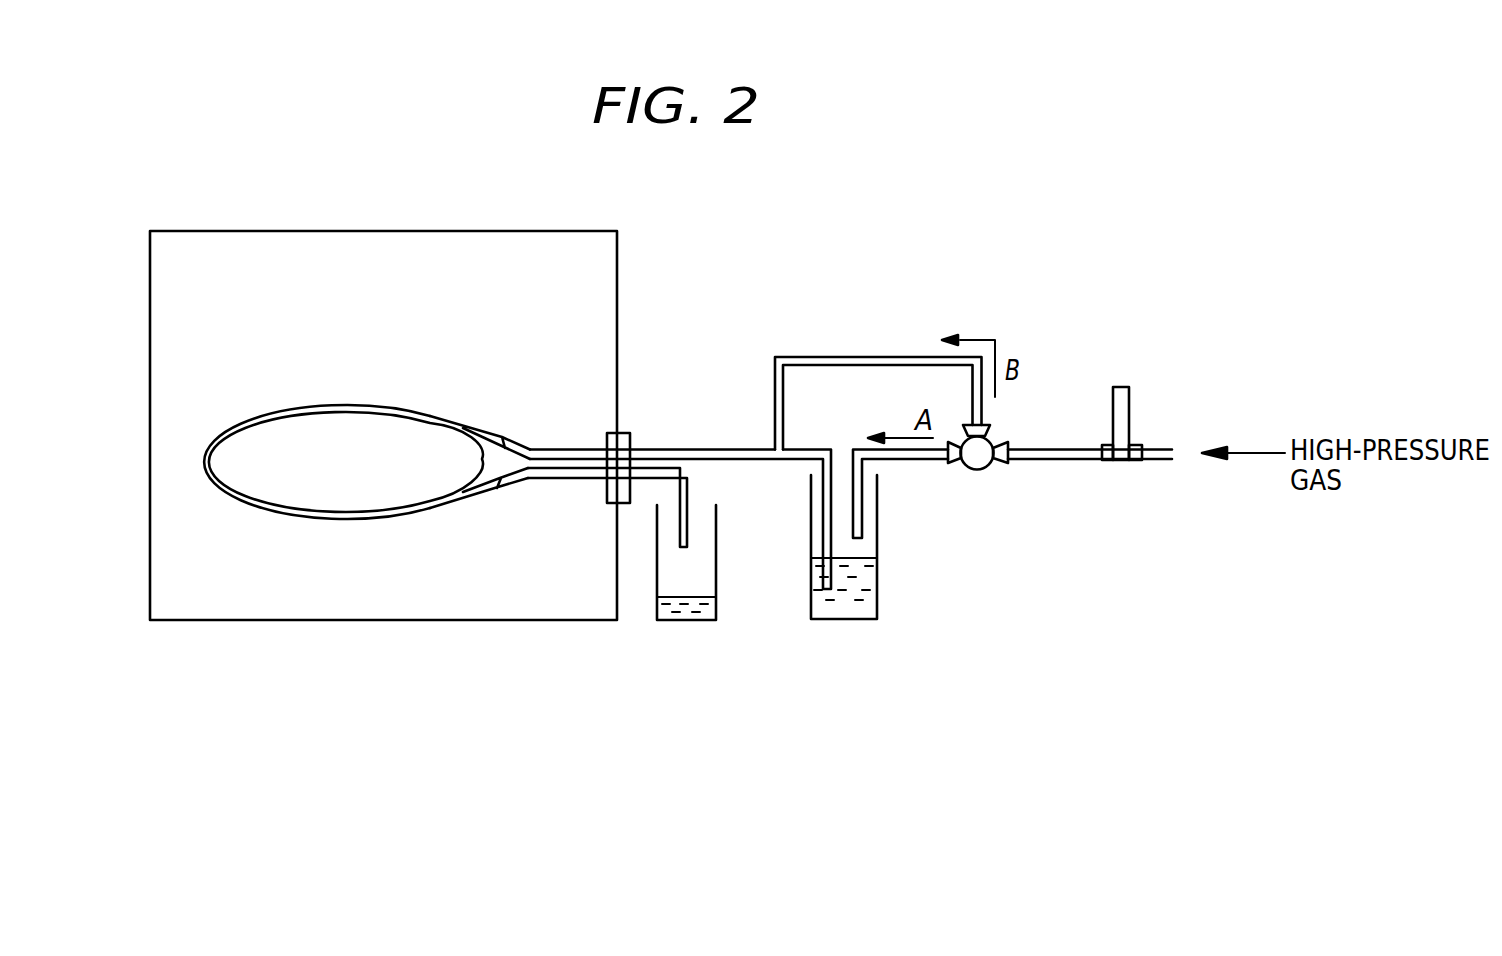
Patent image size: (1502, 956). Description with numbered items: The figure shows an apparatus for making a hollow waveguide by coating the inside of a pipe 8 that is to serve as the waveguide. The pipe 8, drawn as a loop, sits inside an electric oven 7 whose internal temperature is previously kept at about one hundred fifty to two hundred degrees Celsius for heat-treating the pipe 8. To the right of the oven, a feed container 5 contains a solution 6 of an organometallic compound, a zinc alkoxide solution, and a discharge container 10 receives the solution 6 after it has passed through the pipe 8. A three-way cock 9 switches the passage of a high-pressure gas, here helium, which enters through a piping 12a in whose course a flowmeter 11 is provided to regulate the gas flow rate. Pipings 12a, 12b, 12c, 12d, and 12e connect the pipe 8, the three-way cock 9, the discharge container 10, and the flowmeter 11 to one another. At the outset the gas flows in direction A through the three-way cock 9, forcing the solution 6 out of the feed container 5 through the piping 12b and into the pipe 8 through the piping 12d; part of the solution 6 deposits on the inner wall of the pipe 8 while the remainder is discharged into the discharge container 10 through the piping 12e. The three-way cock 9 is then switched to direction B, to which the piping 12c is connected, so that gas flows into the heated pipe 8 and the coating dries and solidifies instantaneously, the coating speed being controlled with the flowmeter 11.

The feed container 5 is at (870, 539).
The solution 6 is at (868, 607).
The electric oven 7 is at (533, 247).
The pipe 8 is at (353, 514).
The three-way cock 9 is at (982, 458).
The discharge container 10 is at (707, 573).
The flowmeter 11 is at (1125, 418).
The piping 12a is at (1068, 452).
The piping 12b is at (923, 462).
The piping 12c is at (863, 360).
The piping 12d is at (662, 450).
The piping 12e is at (648, 473).